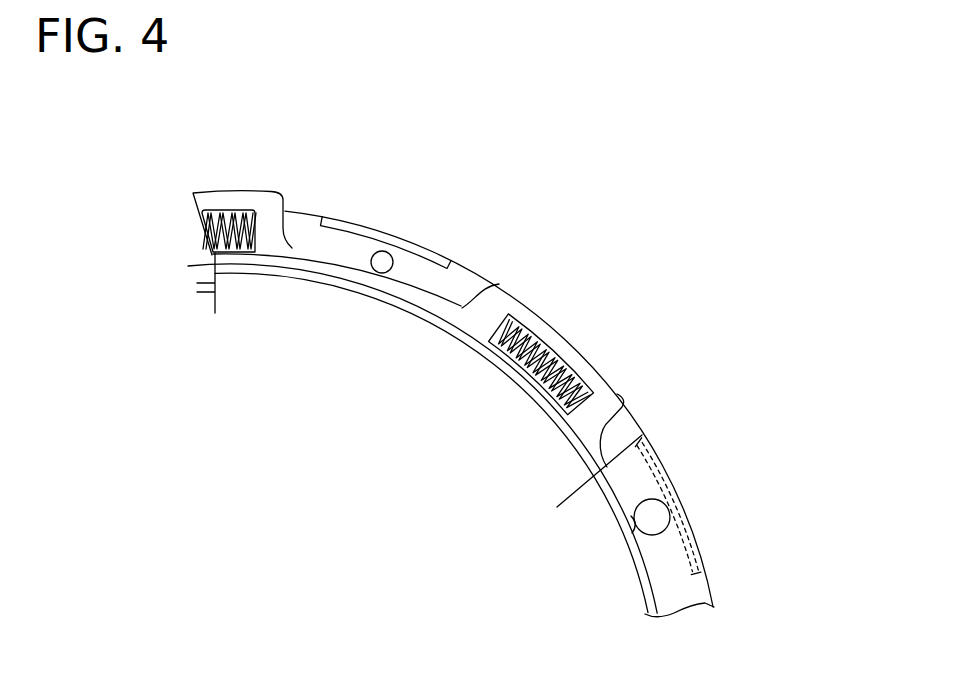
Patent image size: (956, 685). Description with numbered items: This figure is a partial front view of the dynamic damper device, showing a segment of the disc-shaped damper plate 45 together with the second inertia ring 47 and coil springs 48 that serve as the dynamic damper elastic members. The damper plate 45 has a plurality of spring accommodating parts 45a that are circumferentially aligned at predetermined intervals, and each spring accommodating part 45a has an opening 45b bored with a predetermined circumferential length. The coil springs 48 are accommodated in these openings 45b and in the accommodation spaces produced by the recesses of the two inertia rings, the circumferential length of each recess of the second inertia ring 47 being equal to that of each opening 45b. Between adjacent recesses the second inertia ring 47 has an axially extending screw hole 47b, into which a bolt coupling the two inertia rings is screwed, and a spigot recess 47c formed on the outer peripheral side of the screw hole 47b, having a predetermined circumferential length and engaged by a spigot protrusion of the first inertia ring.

The damper plate 45 is at (462, 309).
The spring accommodating part 45a is at (236, 203).
The opening 45b is at (548, 338).
The second inertia ring 47 is at (306, 221).
The screw hole 47b is at (382, 263).
The spigot recess 47c is at (373, 226).
The coil spring 48 is at (573, 366).